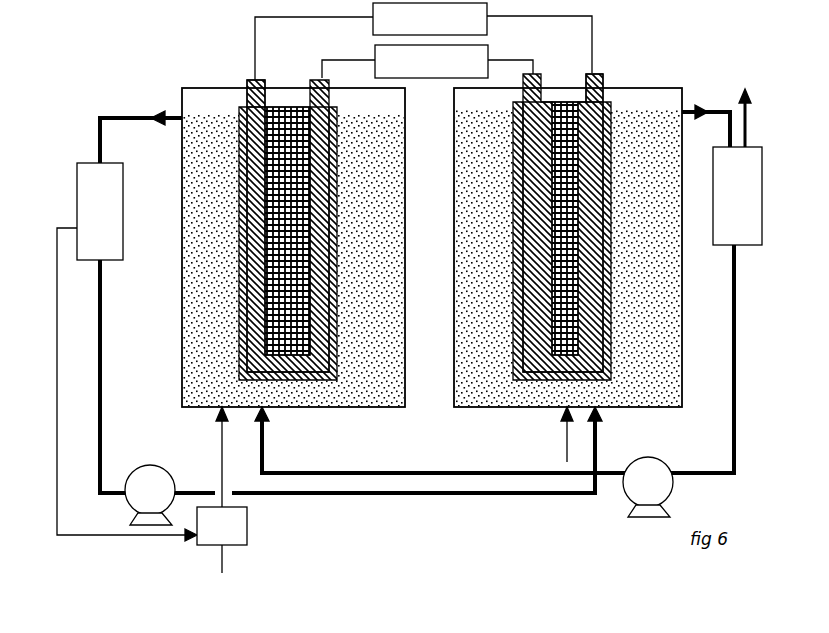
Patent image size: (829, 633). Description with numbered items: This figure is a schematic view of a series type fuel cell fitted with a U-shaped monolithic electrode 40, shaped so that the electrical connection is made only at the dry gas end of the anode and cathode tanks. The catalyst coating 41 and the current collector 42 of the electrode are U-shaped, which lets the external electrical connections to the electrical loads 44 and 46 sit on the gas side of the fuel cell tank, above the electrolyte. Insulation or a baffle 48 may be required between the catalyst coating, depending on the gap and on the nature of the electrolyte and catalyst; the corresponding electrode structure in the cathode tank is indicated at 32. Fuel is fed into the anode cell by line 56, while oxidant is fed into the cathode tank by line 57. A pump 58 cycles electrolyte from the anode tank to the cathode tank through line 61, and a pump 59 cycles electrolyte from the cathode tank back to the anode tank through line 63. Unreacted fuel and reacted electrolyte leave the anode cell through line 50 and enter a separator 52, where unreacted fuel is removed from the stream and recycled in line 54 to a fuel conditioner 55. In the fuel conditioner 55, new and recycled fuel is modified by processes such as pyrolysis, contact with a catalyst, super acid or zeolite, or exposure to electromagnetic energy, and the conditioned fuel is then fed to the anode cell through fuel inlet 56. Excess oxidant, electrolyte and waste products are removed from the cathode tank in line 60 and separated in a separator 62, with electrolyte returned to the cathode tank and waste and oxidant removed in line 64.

The second electrode assembly 32 is at (612, 210).
The U-shaped monolithic electrode 40 is at (241, 82).
The catalyst coating 41 is at (242, 212).
The current collector 42 is at (250, 186).
The electrical load 44 is at (427, 61).
The electrical load 46 is at (423, 41).
The insulation or baffle 48 is at (590, 90).
The line 50 is at (103, 114).
The separator 52 is at (100, 240).
The line 54 is at (62, 380).
The fuel conditioner 55 is at (236, 535).
The fuel inlet line 56 is at (218, 452).
The oxidant feed line 57 is at (565, 432).
The pump 58 is at (150, 497).
The pump 59 is at (640, 488).
The line 60 is at (716, 108).
The line 61 is at (598, 433).
The separator 62 is at (736, 235).
The line 63 is at (345, 472).
The line 64 is at (745, 115).